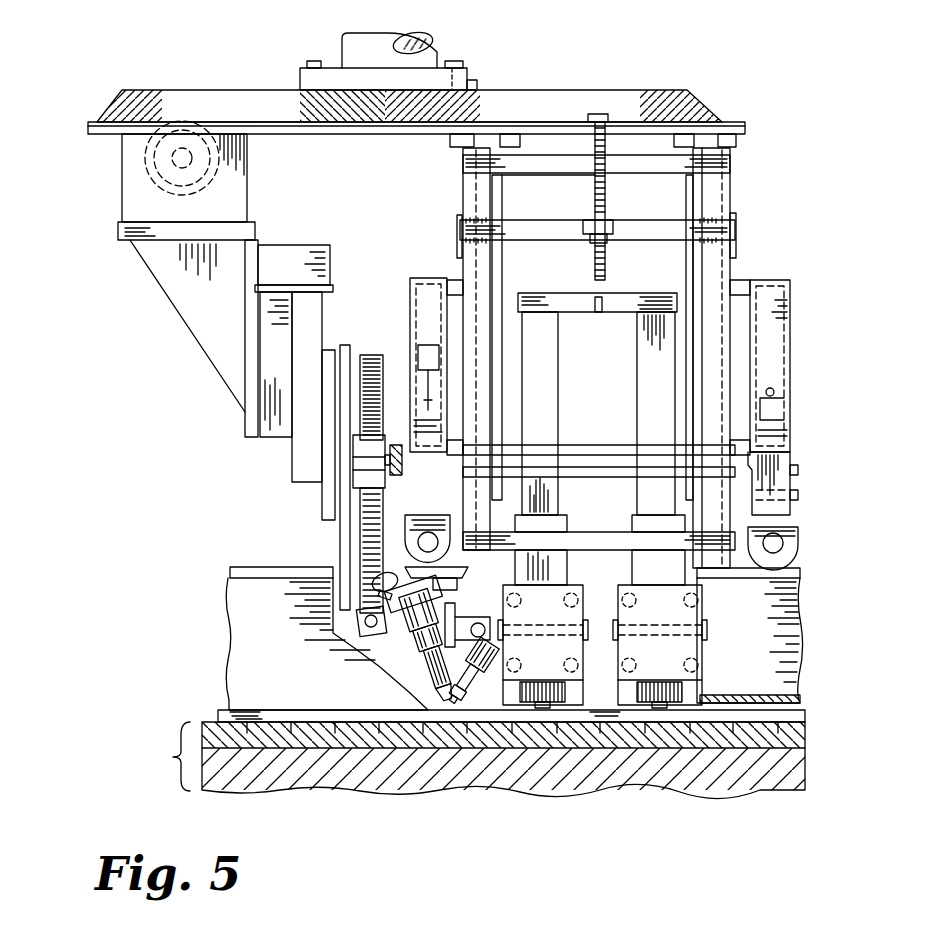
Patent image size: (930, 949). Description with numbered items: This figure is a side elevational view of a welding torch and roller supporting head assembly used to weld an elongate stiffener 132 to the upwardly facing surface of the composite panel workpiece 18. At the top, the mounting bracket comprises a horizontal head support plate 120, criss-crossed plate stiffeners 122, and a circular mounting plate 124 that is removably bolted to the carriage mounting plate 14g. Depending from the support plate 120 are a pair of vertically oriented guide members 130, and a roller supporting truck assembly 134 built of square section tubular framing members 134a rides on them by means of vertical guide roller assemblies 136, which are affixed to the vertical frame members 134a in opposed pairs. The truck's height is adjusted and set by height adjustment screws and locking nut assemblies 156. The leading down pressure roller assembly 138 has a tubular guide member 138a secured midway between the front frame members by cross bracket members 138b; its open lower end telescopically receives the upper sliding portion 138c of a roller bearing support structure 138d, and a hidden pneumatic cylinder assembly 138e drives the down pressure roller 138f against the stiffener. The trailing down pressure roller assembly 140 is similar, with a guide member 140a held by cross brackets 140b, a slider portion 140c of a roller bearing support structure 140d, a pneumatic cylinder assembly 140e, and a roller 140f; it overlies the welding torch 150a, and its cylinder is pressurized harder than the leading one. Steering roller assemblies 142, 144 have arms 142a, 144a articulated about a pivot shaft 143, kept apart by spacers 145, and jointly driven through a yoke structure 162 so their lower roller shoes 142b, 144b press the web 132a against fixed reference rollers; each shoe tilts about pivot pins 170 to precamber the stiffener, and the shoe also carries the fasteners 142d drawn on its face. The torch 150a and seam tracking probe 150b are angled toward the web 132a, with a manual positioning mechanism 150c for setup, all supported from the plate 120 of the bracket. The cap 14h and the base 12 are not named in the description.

The base 12 is at (474, 760).
The carriage mounting plate 14g is at (478, 72).
The cap 14h is at (434, 42).
The panel workpiece 18 is at (220, 711).
The head support plate 120 is at (88, 128).
The plate stiffeners 122 is at (170, 90).
The circular mounting plate 124 is at (300, 88).
The vertical guide members 130 is at (462, 152).
The stiffener 132 is at (233, 558).
The web 132a is at (240, 617).
The roller supporting truck assembly 134 is at (484, 286).
The tubular framing members 134a is at (527, 178).
The vertical guide roller assemblies 136 is at (457, 233).
The leading down pressure roller assembly 138 is at (750, 367).
The tubular guide member 138a is at (575, 313).
The cross bracket members 138b is at (737, 278).
The upper sliding portion 138c is at (750, 412).
The down pressure roller bearing support structure 138d is at (640, 478).
The pneumatic cylinder assembly 138e is at (734, 298).
The down pressure roller 138f is at (770, 568).
The trailing down pressure roller assembly 140 is at (406, 322).
The guide member 140a is at (410, 348).
The cross brackets 140b is at (450, 281).
The slider portion 140c is at (360, 442).
The roller bearing support structure 140d is at (413, 521).
The pneumatic cylinder assembly 140e is at (405, 292).
The roller 140f is at (410, 549).
The steering roller assembly 142 is at (608, 645).
The arm 142a is at (556, 490).
The roller bearing support shoe 142b is at (634, 662).
The bolt 142d is at (516, 603).
The pivot shaft 143 is at (580, 460).
The steering roller assembly 144 is at (704, 618).
The arm 144a is at (642, 480).
The roller bearing support shoe 144b is at (652, 590).
The spacers 145 is at (508, 444).
The welding torch 150a is at (430, 662).
The seam tracking probe 150b is at (458, 690).
The manual positioning mechanism 150c is at (222, 172).
The height adjustment screws and locking nut assemblies 156 is at (612, 201).
The yoke structure 162 is at (572, 306).
The pivot pins 170 is at (500, 600).